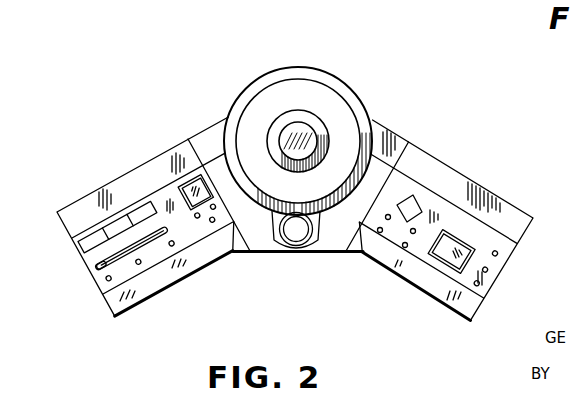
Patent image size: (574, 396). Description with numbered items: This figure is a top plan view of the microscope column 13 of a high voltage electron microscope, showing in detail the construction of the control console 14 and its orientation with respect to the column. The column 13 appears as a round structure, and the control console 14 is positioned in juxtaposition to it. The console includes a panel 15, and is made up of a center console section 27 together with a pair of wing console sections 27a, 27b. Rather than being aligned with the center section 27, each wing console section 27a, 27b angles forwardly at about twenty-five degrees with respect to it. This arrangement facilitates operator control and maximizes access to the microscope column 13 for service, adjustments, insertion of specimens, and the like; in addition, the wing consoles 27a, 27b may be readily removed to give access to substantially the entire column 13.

The microscope column 13 is at (303, 69).
The control console 14 is at (493, 193).
The panel 15 is at (95, 265).
The center console section 27 is at (304, 254).
The wing console section 27a is at (178, 285).
The wing console section 27b is at (476, 324).